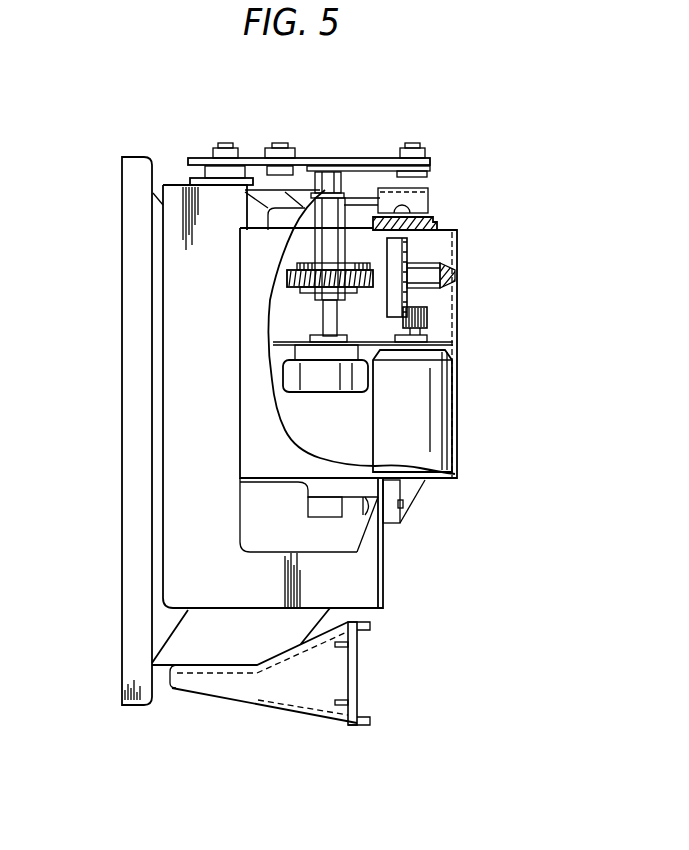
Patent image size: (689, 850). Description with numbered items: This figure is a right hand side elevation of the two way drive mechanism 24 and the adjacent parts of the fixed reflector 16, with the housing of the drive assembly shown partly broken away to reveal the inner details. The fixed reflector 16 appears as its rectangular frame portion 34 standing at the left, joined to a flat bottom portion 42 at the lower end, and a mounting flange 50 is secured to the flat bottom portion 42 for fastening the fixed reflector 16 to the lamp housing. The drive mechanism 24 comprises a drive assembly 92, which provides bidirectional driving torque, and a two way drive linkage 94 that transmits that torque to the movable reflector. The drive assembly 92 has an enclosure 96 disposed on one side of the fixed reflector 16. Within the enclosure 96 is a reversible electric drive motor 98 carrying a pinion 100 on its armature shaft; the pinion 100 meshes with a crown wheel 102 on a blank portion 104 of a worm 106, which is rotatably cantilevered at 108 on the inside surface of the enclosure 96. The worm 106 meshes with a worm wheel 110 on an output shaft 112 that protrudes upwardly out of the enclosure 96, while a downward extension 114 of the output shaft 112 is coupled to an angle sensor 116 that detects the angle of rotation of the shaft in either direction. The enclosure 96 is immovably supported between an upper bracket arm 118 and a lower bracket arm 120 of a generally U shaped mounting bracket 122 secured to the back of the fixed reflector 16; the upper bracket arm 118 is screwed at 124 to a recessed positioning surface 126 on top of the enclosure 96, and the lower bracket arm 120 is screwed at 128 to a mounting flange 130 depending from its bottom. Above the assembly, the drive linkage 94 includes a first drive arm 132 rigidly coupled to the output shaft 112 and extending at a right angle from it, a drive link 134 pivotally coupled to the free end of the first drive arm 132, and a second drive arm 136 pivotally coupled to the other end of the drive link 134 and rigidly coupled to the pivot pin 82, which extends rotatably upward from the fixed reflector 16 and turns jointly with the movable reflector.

The fixed reflector 16 is at (118, 212).
The two way drive mechanism 24 is at (489, 107).
The frame portion 34 is at (132, 157).
The flat bottom portion 42 is at (160, 667).
The mounting flange 50 is at (355, 685).
The pivot pin 82 is at (220, 170).
The drive assembly 92 is at (463, 303).
The two way drive linkage 94 is at (418, 138).
The enclosure 96 is at (248, 390).
The reversible electric drive motor 98 is at (438, 422).
The pinion 100 is at (428, 317).
The crown wheel 102 is at (408, 252).
The blank portion 104 is at (434, 278).
The worm 106 is at (300, 262).
The cantilever mounting 108 is at (448, 275).
The worm wheel 110 is at (285, 280).
The output shaft 112 is at (330, 180).
The downward extension 114 is at (323, 322).
The angle sensor 116 is at (323, 386).
The upper bracket arm 118 is at (420, 188).
The lower bracket arm 120 is at (383, 577).
The mounting bracket 122 is at (173, 185).
The screw 124 is at (403, 207).
The recessed positioning surface 126 is at (417, 211).
The screw 128 is at (368, 507).
The mounting flange 130 is at (400, 520).
The first drive arm 132 is at (380, 160).
The drive link 134 is at (358, 157).
The second drive arm 136 is at (252, 158).